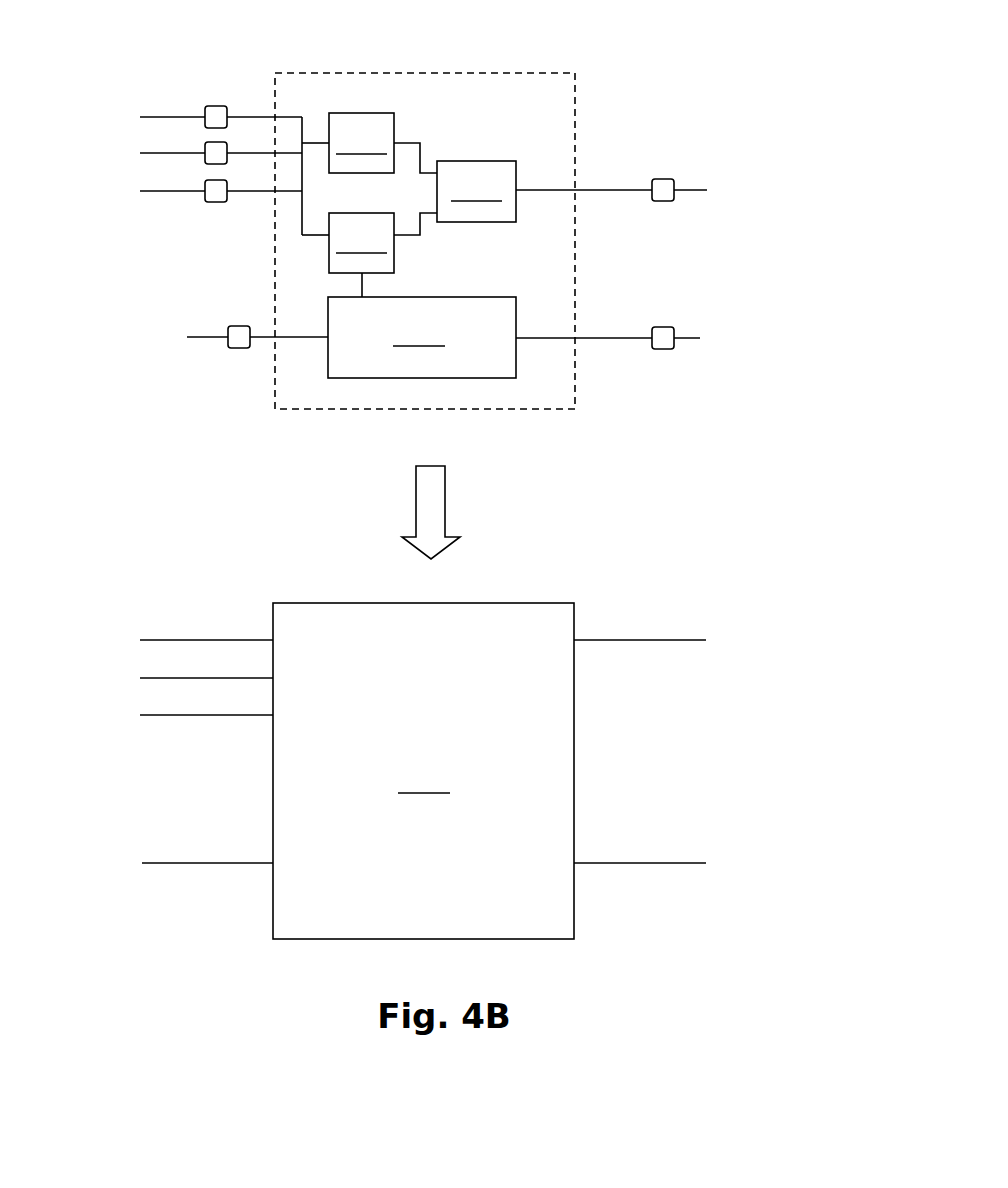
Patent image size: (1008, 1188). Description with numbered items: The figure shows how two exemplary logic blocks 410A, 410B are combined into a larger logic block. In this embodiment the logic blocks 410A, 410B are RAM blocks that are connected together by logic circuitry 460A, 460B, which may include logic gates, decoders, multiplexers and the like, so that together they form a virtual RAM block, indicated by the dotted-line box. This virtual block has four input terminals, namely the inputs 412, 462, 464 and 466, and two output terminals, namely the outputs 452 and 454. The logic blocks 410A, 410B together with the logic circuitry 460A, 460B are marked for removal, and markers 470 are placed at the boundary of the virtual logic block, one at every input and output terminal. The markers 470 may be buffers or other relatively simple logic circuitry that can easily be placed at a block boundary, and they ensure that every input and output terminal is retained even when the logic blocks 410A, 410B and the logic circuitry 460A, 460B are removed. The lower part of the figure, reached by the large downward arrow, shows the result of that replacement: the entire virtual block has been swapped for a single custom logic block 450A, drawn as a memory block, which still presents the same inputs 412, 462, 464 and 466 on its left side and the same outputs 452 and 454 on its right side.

The custom logic block 450A is at (577, 83).
The output 452 is at (633, 190).
The output 454 is at (688, 337).
The logic circuitry 460A is at (361, 143).
The logic circuitry 460B is at (361, 243).
The logic block 410A is at (476, 191).
The logic block 410B is at (422, 337).
The input 412 is at (203, 339).
The input 462 is at (261, 116).
The input 464 is at (188, 153).
The input 466 is at (268, 192).
The markers 470 is at (216, 116).